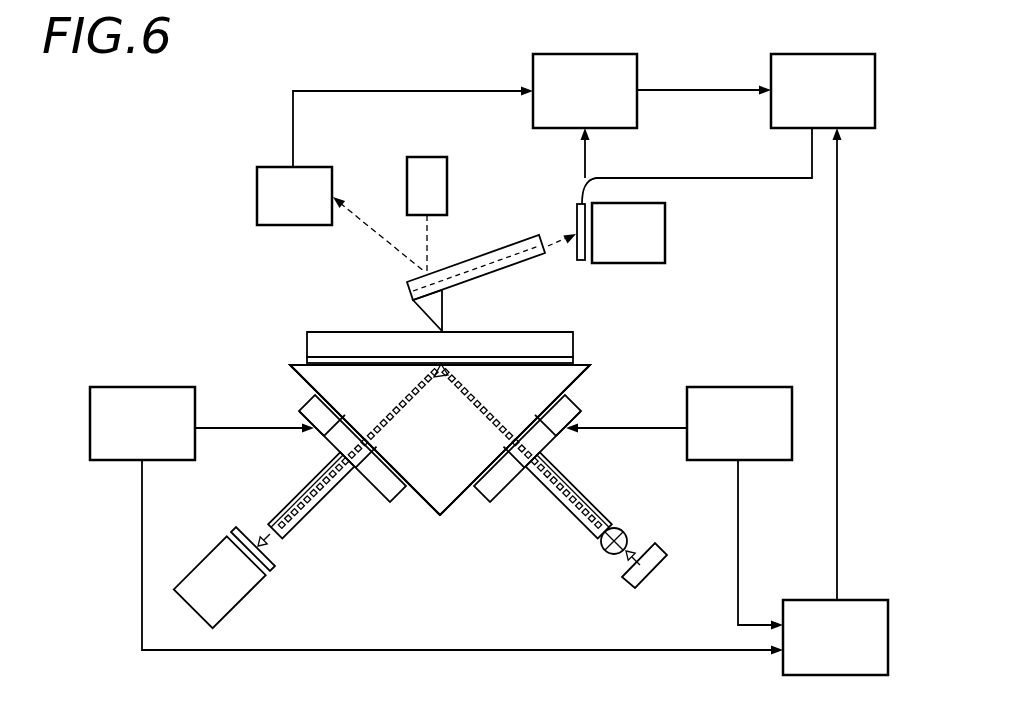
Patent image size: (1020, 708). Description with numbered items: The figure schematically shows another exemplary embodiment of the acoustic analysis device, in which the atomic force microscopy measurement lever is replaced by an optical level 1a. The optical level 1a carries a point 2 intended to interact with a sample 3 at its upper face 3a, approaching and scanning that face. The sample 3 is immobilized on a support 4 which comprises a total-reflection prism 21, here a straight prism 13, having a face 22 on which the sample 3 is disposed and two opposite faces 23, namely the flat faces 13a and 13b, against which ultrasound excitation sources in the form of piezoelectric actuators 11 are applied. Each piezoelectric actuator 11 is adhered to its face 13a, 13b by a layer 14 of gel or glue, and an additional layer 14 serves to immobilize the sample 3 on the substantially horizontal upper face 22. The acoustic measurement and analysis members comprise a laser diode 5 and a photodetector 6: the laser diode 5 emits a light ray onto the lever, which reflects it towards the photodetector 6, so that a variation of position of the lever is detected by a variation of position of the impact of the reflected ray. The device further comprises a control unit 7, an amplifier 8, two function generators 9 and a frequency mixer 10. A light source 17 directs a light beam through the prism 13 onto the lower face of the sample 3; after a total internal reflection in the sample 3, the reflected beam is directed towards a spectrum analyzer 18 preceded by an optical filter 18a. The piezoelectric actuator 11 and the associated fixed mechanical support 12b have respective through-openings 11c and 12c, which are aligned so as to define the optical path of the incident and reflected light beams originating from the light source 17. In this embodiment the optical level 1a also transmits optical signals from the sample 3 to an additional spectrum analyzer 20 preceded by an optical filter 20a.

The optical level 1a is at (505, 230).
The point 2 is at (440, 307).
The sample 3 is at (556, 308).
The upper face 3a is at (333, 330).
The support 4 is at (397, 527).
The laser diode 5 is at (419, 202).
The photodetector 6 is at (286, 212).
The control unit 7 is at (577, 108).
The amplifier 8 is at (815, 108).
The function generators 9 is at (135, 439).
The frequency mixer 10 is at (818, 653).
The piezoelectric actuators 11 is at (372, 487).
The through-opening 11c is at (321, 433).
The fixed mechanical support 12b is at (321, 522).
The through-opening 12c is at (297, 490).
The straight prism 13 is at (439, 455).
The flat face 13a is at (575, 363).
The flat face 13b is at (295, 378).
The layer of gel or glue 14 is at (585, 374).
The light source 17 is at (664, 580).
The spectrum analyzer 18 is at (198, 599).
The optical filter 18a is at (233, 531).
The additional spectrum analyzer 20 is at (611, 249).
The optical filter 20a is at (594, 178).
The total-reflection prism 21 is at (491, 455).
The face 22 is at (300, 362).
The opposite faces 23 is at (482, 338).